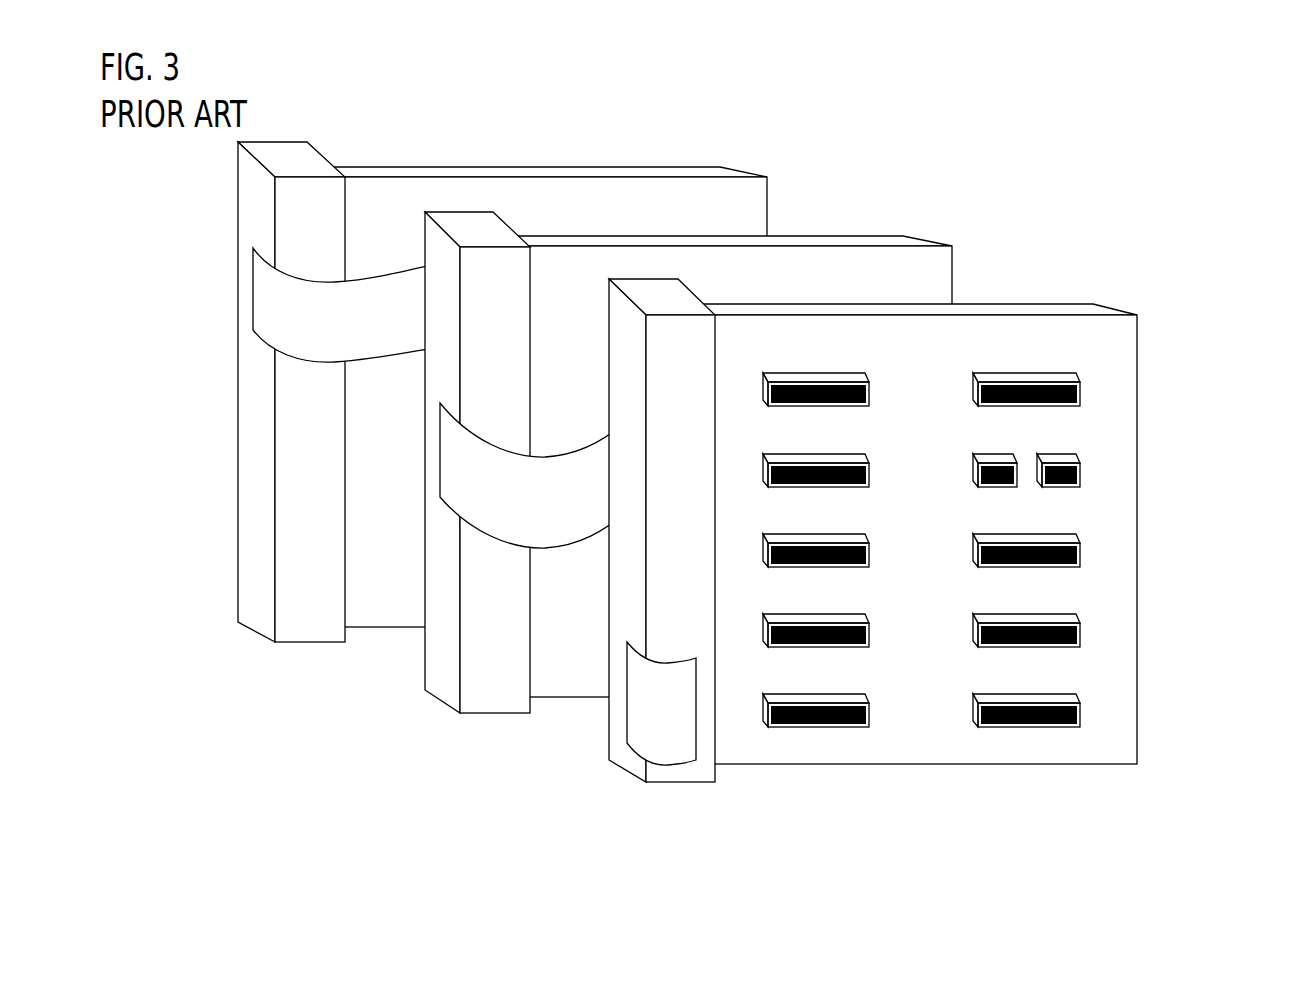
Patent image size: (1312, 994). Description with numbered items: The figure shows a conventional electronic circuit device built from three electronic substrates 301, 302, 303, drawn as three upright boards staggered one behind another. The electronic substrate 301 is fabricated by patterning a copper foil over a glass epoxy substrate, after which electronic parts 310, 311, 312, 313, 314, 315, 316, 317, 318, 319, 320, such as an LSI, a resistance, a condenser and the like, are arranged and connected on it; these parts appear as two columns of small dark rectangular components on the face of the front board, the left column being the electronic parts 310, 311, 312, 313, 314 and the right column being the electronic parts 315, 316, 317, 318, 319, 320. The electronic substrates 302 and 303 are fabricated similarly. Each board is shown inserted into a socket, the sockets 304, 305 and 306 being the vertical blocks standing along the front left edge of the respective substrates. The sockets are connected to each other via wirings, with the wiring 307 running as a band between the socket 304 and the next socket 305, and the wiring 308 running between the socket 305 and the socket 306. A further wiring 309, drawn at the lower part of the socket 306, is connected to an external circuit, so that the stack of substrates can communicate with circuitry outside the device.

The electronic substrate 301 is at (1107, 305).
The electronic substrate 302 is at (920, 235).
The electronic substrate 303 is at (748, 172).
The socket 304 is at (272, 142).
The socket 305 is at (477, 210).
The socket 306 is at (658, 279).
The wiring 307 is at (265, 292).
The wiring 308 is at (452, 507).
The wiring 309 is at (627, 728).
The electronic part 310 is at (826, 389).
The electronic part 311 is at (826, 470).
The electronic part 312 is at (826, 555).
The electronic part 313 is at (830, 630).
The electronic part 314 is at (828, 712).
The electronic part 315 is at (1018, 390).
The electronic part 316 is at (993, 466).
The electronic part 317 is at (1044, 466).
The electronic part 318 is at (1020, 553).
The electronic part 319 is at (1020, 633).
The electronic part 320 is at (1020, 713).